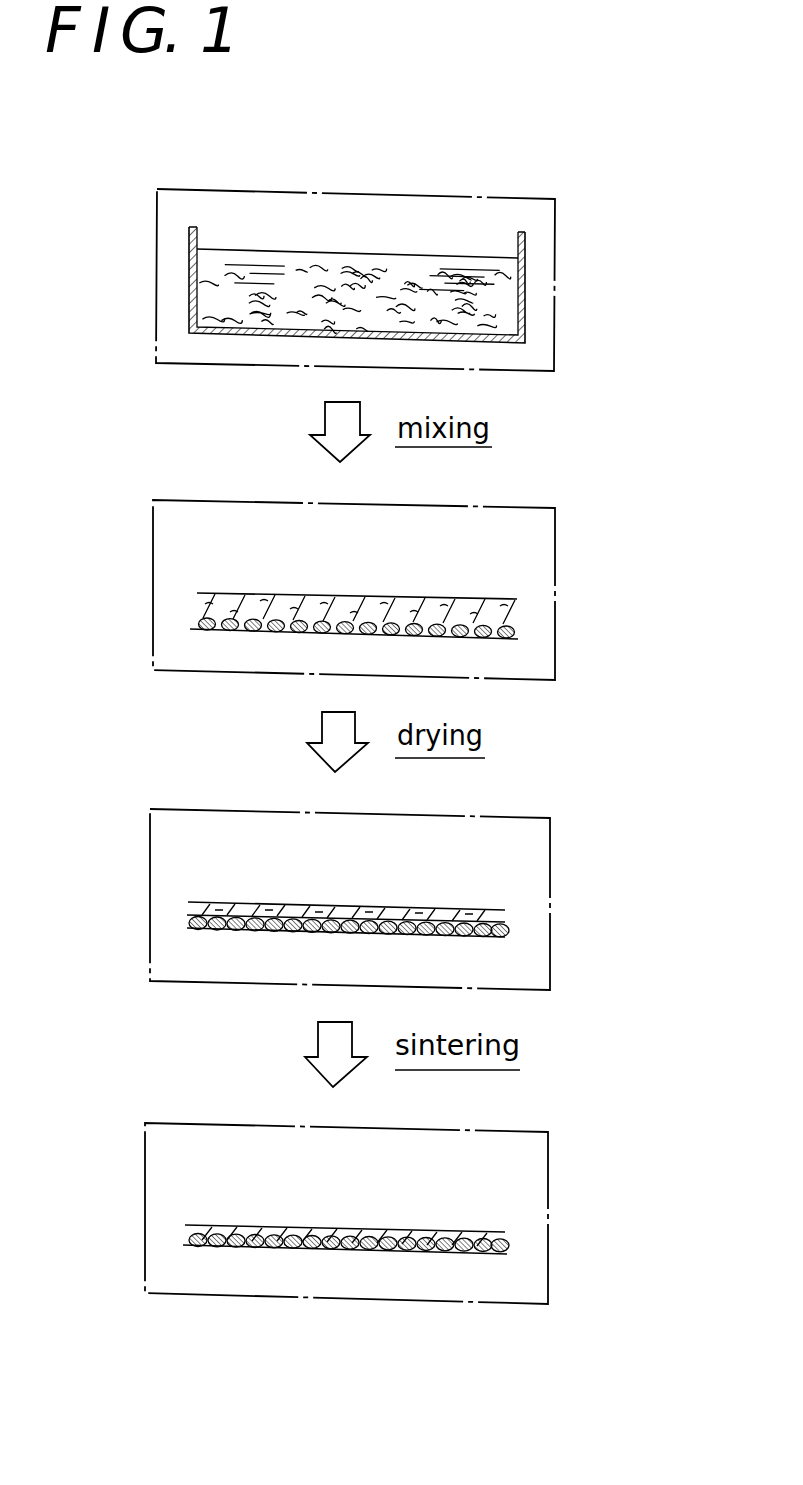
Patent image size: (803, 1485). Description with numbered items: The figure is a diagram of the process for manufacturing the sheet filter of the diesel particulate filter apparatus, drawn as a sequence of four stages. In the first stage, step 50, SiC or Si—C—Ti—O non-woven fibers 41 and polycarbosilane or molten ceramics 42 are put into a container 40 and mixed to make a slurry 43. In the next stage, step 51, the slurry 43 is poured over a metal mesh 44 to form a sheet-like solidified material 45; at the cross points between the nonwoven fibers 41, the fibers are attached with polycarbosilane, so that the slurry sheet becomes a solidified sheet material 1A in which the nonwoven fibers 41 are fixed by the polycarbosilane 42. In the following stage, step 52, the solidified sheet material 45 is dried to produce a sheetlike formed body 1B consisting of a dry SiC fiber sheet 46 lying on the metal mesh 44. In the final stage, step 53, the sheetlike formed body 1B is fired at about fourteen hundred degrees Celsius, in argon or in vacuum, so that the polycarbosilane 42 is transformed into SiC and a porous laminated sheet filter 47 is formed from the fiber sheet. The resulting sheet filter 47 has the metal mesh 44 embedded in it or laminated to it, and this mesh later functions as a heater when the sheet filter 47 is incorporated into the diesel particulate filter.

The solidified sheet material 1A is at (301, 534).
The sheetlike formed body 1B is at (292, 849).
The container 40 is at (189, 293).
The non-woven fibers 41 is at (367, 293).
The polycarbosilane or molten ceramics 42 is at (448, 275).
The slurry 43 is at (308, 251).
The metal mesh 44 is at (237, 634).
The sheet-like solidified material 45 is at (263, 593).
The dry SiC fiber sheet 46 is at (402, 905).
The laminated sheet filter 47 is at (385, 1256).
The step of putting fibers and polycarbosilane in container 50 is at (555, 232).
The step of forming solidified sheet material 51 is at (555, 535).
The drying step 52 is at (550, 857).
The firing step 53 is at (548, 1165).